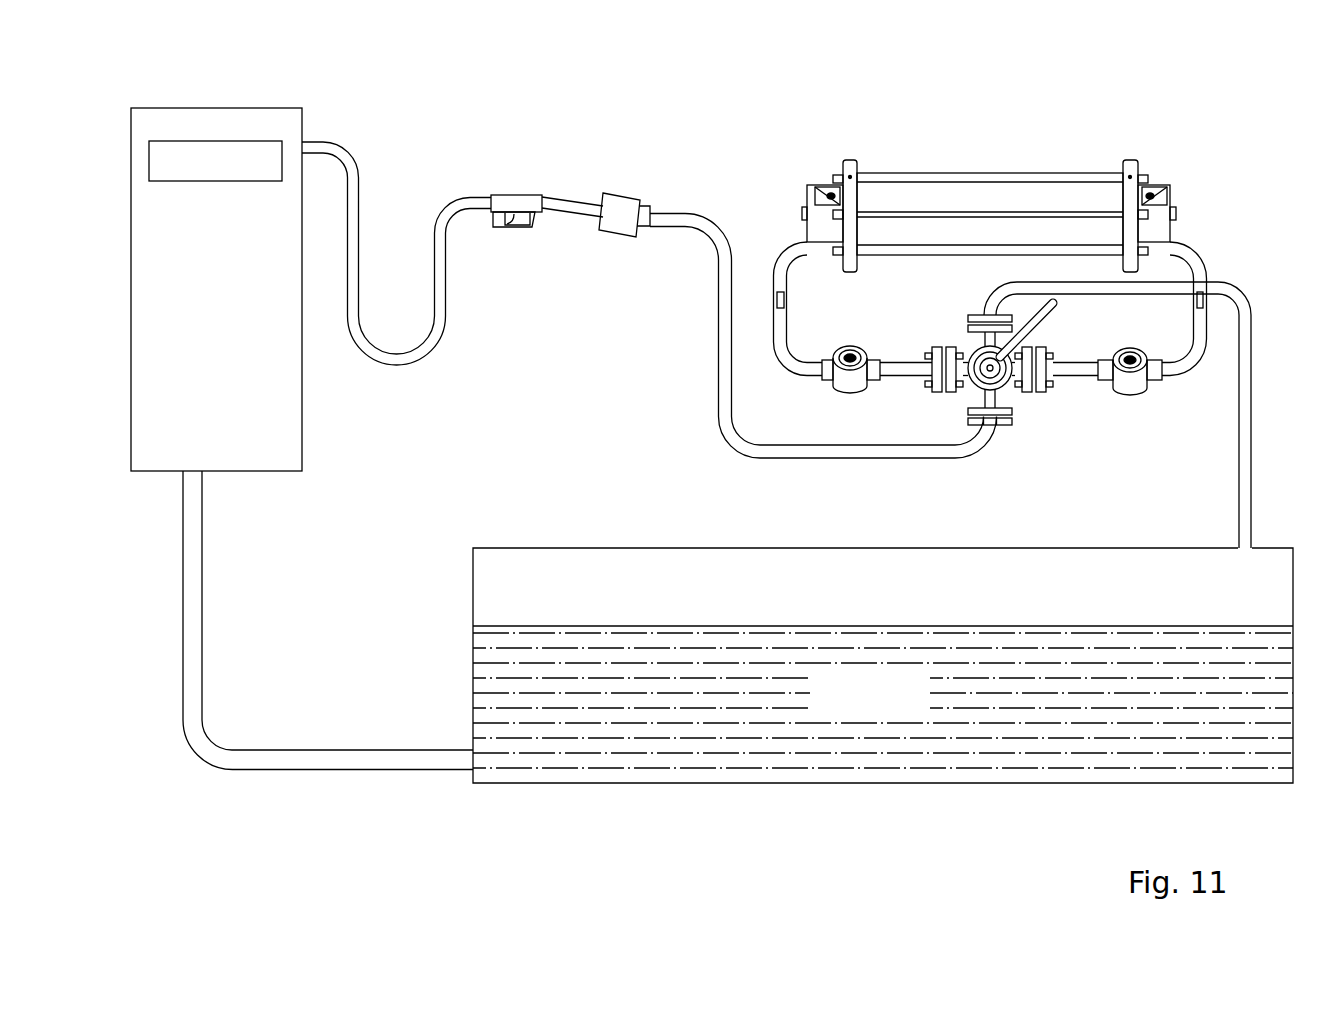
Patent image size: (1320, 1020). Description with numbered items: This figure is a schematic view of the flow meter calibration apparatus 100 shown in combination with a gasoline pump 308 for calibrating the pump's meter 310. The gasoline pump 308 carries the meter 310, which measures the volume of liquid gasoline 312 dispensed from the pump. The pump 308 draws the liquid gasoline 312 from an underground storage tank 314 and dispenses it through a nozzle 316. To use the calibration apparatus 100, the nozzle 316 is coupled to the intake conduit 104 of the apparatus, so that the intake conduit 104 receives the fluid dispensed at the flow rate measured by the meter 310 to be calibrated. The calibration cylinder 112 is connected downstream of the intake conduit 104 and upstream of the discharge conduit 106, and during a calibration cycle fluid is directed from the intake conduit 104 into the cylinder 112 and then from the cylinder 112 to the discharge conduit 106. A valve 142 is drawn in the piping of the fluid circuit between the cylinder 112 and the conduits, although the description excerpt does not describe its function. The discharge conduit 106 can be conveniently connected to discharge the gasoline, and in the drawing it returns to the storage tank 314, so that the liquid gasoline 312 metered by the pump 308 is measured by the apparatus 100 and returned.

The flow meter calibration apparatus 100 is at (990, 266).
The intake conduit 104 is at (840, 459).
The discharge conduit 106 is at (1252, 382).
The calibration cylinder 112 is at (878, 192).
The valve 142 is at (1028, 403).
The gasoline pump 308 is at (233, 248).
The meter 310 is at (188, 181).
The liquid gasoline 312 is at (942, 724).
The underground storage tank 314 is at (883, 628).
The nozzle 316 is at (578, 200).